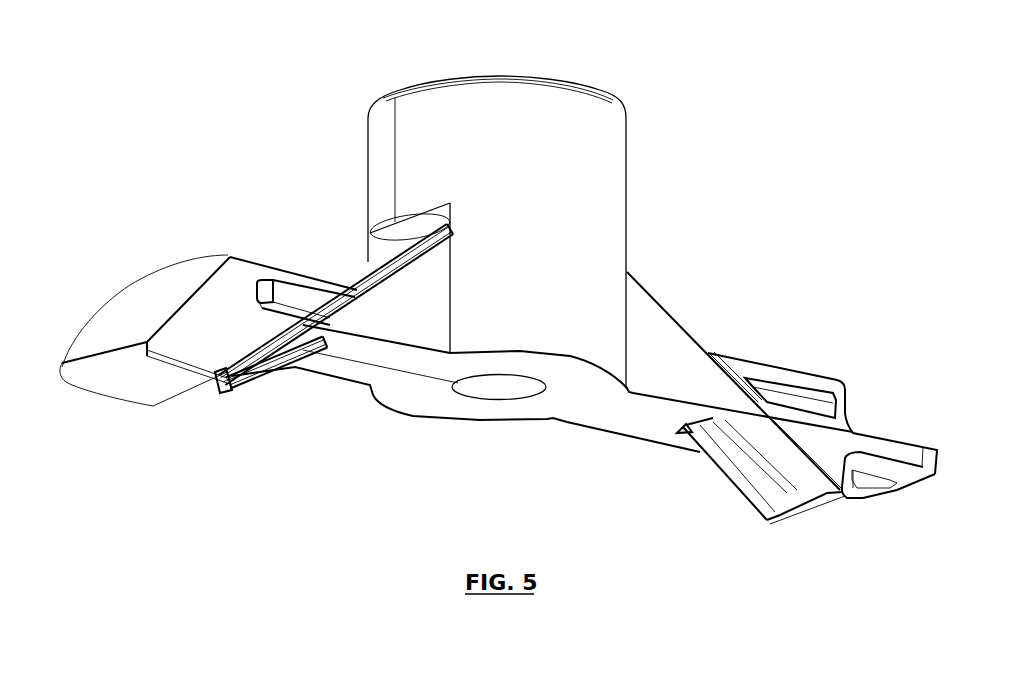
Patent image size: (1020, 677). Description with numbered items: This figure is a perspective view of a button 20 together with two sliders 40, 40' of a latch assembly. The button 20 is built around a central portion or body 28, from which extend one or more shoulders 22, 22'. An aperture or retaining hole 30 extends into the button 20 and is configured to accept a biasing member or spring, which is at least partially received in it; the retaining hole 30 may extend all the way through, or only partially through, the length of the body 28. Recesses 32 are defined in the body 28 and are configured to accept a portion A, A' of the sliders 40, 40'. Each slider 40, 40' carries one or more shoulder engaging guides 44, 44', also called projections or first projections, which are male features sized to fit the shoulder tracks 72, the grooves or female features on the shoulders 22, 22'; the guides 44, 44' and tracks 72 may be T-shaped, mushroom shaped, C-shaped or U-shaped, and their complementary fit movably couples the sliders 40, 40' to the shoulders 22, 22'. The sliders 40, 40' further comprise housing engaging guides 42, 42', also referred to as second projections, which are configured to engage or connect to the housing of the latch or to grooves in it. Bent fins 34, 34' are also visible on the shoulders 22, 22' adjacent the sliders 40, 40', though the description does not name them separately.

The button 20 is at (262, 106).
The shoulder 22 is at (410, 278).
The shoulder 22' is at (743, 389).
The central portion or body 28 is at (564, 296).
The aperture or retaining hole 30 is at (515, 385).
The recess 32 is at (393, 227).
The first bent fin 34 is at (336, 291).
The second bent fin 34' is at (734, 351).
The slider 40 is at (208, 288).
The slider 40' is at (822, 394).
The housing engaging guide 42 is at (318, 366).
The housing engaging guide 42' is at (790, 364).
The shoulder engaging guide 44 is at (271, 385).
The shoulder engaging guide 44' is at (761, 476).
The shoulder track 72 is at (383, 255).
The portion of slider A is at (397, 370).
The portion of slider A' is at (719, 323).